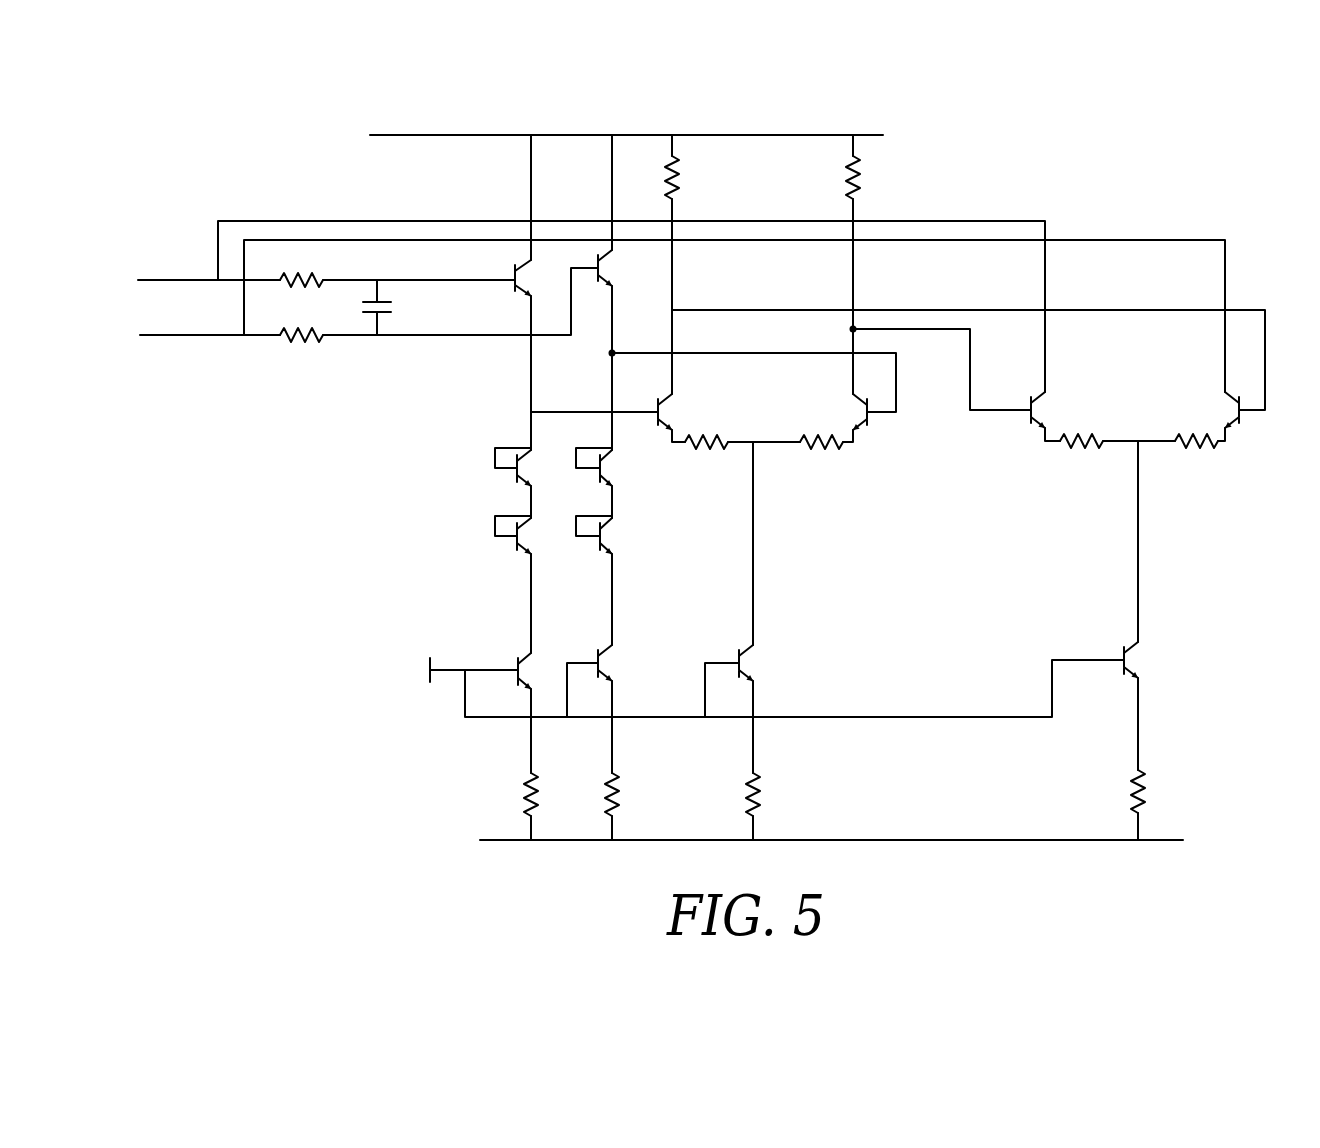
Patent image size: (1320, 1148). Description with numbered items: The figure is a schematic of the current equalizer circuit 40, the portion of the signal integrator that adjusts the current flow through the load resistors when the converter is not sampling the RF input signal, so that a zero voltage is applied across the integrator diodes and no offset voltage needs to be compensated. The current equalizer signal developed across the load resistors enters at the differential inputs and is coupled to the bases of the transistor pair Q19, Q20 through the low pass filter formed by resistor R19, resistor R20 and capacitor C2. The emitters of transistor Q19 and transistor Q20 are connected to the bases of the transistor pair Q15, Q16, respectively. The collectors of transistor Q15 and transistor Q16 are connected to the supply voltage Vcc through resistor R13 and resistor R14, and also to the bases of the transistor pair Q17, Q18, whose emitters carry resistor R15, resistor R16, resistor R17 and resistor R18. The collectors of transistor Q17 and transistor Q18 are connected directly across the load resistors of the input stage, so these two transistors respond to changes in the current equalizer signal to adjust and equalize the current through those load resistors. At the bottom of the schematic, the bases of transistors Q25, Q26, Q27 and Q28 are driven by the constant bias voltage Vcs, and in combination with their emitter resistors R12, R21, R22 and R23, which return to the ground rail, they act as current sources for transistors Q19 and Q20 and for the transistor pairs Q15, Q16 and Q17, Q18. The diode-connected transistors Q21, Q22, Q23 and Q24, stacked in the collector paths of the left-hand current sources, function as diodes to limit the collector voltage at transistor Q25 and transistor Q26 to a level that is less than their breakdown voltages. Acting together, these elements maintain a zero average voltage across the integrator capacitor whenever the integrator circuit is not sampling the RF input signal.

The current equalizer circuit 40 is at (1203, 154).
The transistor Q15 is at (685, 412).
The transistor Q16 is at (837, 412).
The transistor Q17 is at (1059, 409).
The transistor Q18 is at (1210, 409).
The transistor Q19 is at (501, 272).
The transistor Q20 is at (626, 268).
The transistor Q21 is at (490, 467).
The transistor Q22 is at (614, 467).
The transistor Q23 is at (491, 533).
The transistor Q24 is at (614, 535).
The transistor Q25 is at (508, 656).
The transistor Q26 is at (592, 645).
The transistor Q27 is at (729, 646).
The transistor Q28 is at (1110, 646).
The emitter resistor R12 is at (511, 794).
The resistor R13 is at (695, 179).
The resistor R14 is at (872, 179).
The resistor R15 is at (711, 463).
The resistor R16 is at (821, 463).
The resistor R17 is at (1083, 461).
The resistor R18 is at (1196, 461).
The resistor R19 is at (314, 264).
The resistor R20 is at (301, 355).
The emitter resistor R21 is at (593, 794).
The emitter resistor R22 is at (732, 794).
The emitter resistor R23 is at (1111, 789).
The capacitor C2 is at (394, 305).